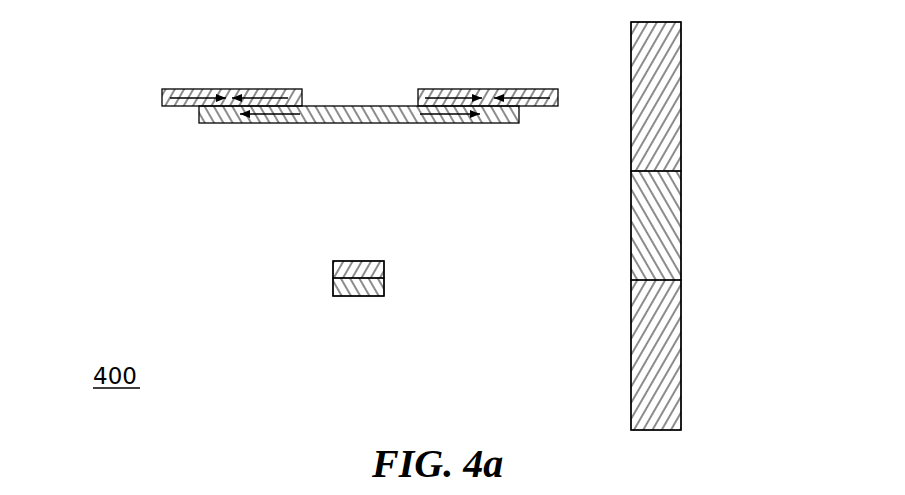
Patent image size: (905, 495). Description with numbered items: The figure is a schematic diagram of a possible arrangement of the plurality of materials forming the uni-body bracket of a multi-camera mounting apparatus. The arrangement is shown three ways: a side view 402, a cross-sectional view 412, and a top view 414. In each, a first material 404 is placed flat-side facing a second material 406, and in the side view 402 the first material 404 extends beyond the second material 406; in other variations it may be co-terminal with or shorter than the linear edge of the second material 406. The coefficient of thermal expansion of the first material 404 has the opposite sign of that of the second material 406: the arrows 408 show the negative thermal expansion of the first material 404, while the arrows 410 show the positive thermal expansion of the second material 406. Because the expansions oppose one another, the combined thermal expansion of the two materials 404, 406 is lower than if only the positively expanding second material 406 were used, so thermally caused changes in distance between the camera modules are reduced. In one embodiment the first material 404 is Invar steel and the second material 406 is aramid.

The side view of the arrangement 402 is at (120, 122).
The first material 404 is at (225, 88).
The second material 406 is at (370, 124).
The arrows showing negative thermal expansion 408 is at (193, 91).
The arrows showing positive thermal expansion 410 is at (290, 122).
The cross-sectional view of the arrangement 412 is at (330, 276).
The top view of the arrangement 414 is at (765, 148).